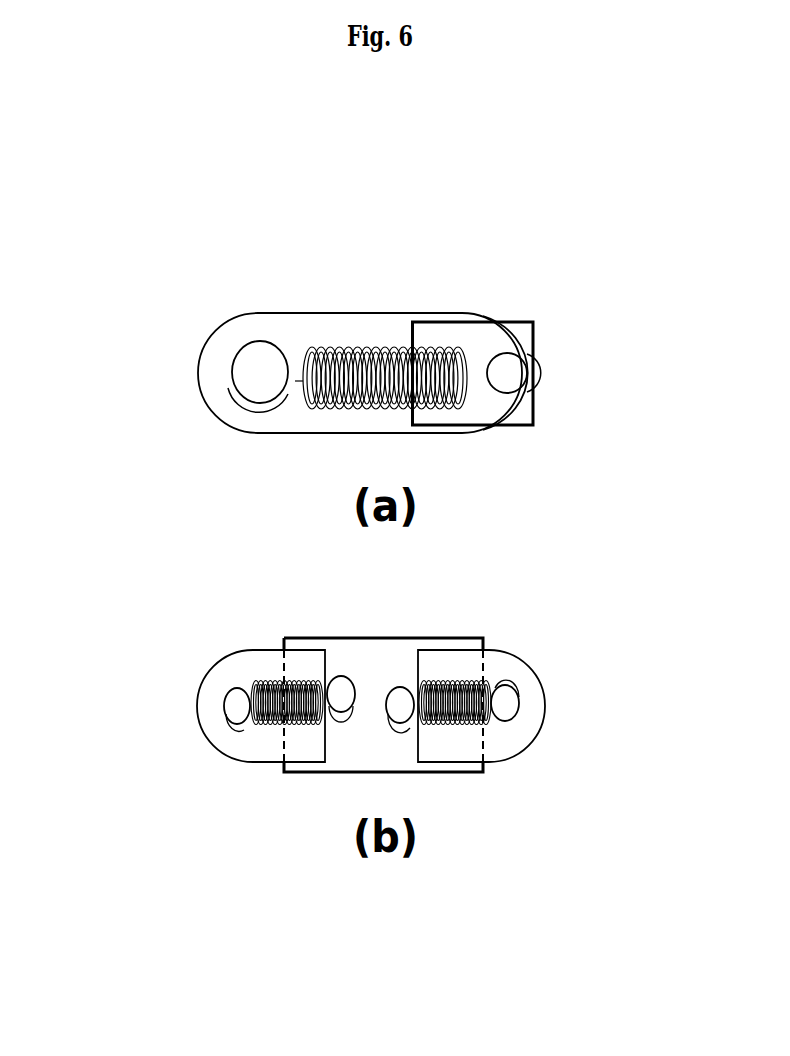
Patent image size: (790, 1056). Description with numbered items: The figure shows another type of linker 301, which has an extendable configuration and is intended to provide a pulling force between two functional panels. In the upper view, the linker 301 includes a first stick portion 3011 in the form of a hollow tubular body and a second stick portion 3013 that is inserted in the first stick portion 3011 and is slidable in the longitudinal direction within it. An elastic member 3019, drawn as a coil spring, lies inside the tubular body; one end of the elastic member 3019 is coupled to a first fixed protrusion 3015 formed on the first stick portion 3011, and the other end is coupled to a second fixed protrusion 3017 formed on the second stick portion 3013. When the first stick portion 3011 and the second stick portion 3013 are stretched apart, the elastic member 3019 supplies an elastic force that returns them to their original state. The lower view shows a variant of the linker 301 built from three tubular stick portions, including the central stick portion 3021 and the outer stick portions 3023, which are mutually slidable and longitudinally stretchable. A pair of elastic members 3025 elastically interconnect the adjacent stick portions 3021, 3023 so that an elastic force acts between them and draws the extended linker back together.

The linker 301 is at (437, 259).
The first stick portion 3011 is at (305, 318).
The second stick portion 3013 is at (557, 342).
The first fixed protrusion 3015 is at (243, 362).
The second fixed protrusion 3017 is at (521, 380).
The elastic member 3019 is at (330, 407).
The stick portion 3021 is at (450, 774).
The stick portion 3023 is at (208, 672).
The elastic members 3025 is at (280, 728).